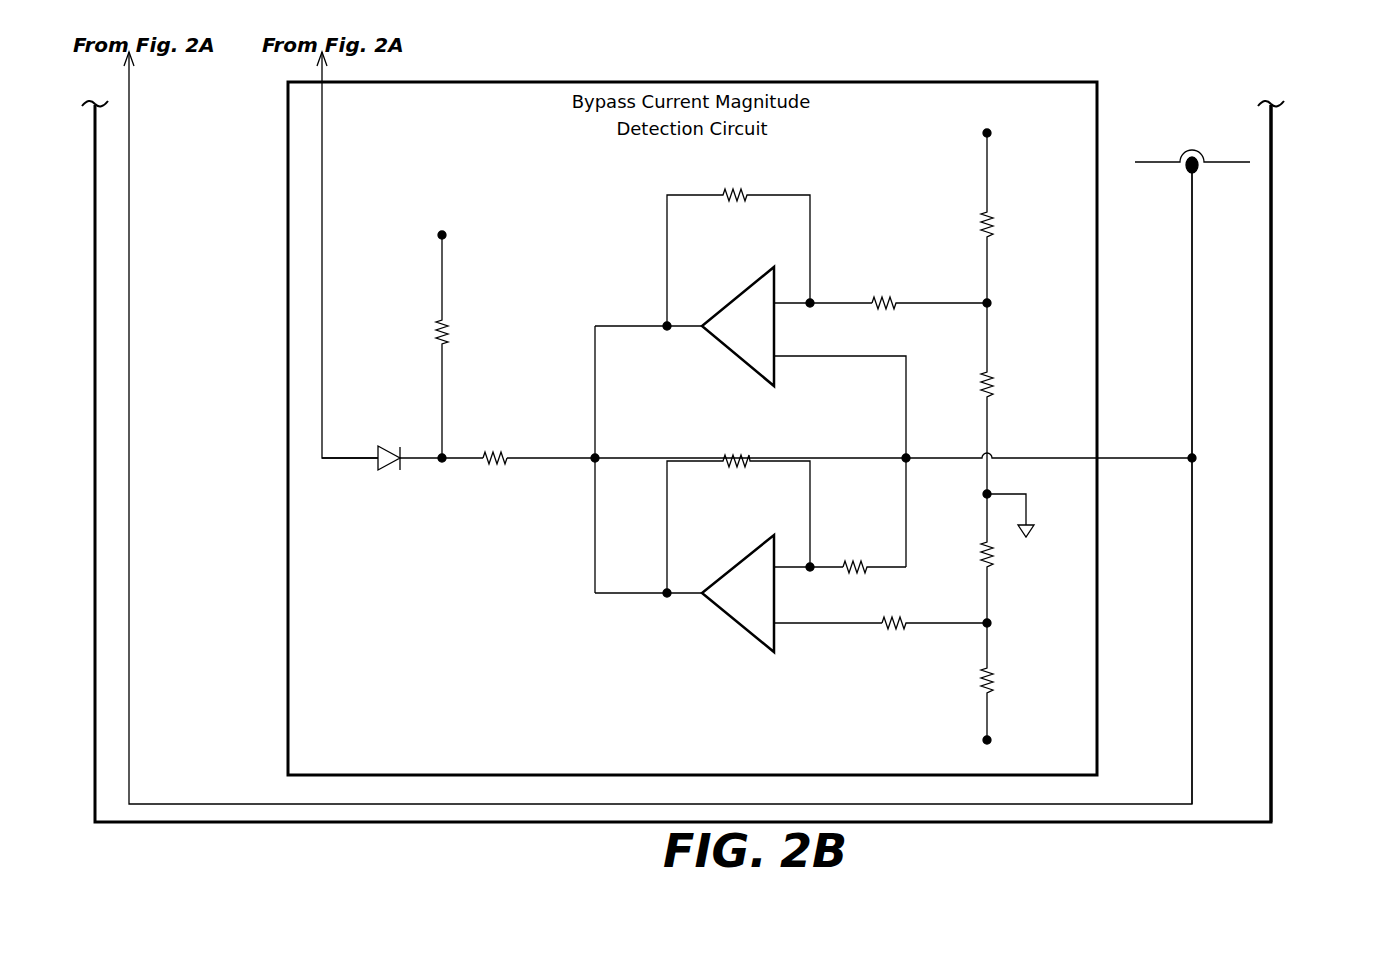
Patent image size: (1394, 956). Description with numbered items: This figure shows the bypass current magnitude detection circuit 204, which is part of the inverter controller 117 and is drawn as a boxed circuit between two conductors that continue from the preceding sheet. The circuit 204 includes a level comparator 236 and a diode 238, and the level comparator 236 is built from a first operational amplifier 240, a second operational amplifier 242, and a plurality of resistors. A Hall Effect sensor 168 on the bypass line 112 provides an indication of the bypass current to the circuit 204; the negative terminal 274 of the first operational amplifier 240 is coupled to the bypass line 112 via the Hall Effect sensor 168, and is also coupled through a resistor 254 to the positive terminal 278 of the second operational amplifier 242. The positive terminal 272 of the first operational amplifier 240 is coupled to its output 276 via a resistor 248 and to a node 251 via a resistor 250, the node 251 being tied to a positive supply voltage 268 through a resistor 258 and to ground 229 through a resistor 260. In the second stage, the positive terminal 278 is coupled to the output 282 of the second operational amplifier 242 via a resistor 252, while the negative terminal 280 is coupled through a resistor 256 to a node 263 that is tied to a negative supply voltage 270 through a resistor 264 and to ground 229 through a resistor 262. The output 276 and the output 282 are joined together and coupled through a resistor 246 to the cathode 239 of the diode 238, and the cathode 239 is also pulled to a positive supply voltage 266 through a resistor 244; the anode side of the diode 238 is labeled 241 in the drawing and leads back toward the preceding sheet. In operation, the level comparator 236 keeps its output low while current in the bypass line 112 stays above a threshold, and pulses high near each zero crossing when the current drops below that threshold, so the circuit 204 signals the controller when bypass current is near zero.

The bypass line 112 is at (1160, 163).
The inverter controller 117 is at (1273, 143).
The Hall Effect sensor 168 is at (1190, 173).
The bypass current magnitude detection circuit 204 is at (1100, 80).
The ground 229 is at (1030, 532).
The level comparator 236 is at (520, 592).
The diode 238 is at (385, 470).
The cathode 239 is at (413, 453).
The first operational amplifier 240 is at (746, 369).
The diode anode 241 is at (378, 460).
The second operational amplifier 242 is at (737, 627).
The resistor 244 is at (448, 320).
The resistor 246 is at (500, 450).
The resistor 248 is at (748, 190).
The resistor 250 is at (890, 296).
The node 251 is at (993, 302).
The resistor 252 is at (750, 458).
The resistor 254 is at (858, 575).
The resistor 256 is at (905, 618).
The resistor 258 is at (995, 218).
The resistor 260 is at (993, 380).
The resistor 262 is at (985, 548).
The node 263 is at (985, 627).
The resistor 264 is at (990, 688).
The positive supply voltage 266 is at (445, 234).
The positive supply voltage 268 is at (985, 132).
The negative supply voltage 270 is at (985, 738).
The positive terminal 272 is at (780, 305).
The negative terminal 274 is at (780, 358).
The output 276 is at (700, 328).
The positive terminal 278 is at (778, 565).
The negative terminal 280 is at (783, 625).
The output 282 is at (700, 595).